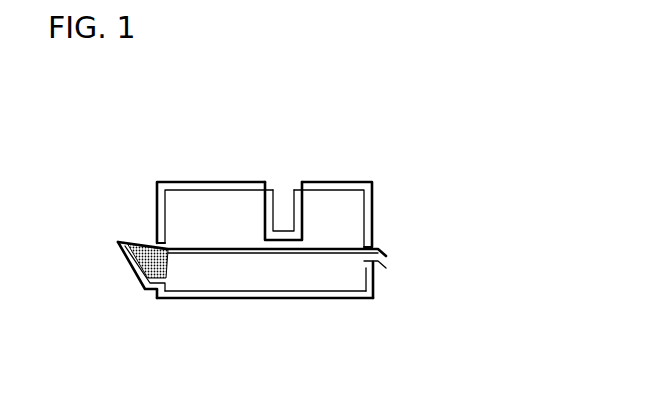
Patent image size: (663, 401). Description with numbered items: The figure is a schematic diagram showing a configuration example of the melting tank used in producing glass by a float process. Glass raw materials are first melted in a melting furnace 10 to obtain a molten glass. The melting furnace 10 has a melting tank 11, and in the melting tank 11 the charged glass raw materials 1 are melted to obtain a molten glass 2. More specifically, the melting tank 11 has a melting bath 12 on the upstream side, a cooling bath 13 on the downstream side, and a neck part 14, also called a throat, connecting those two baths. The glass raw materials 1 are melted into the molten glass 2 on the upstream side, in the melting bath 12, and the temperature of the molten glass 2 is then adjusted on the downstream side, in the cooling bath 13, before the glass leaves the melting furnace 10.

The glass raw materials 1 is at (152, 249).
The molten glass 2 is at (252, 305).
The melting furnace 10 is at (264, 233).
The melting tank 11 is at (247, 298).
The melting bath 12 is at (196, 244).
The cooling bath 13 is at (323, 244).
The neck part 14 is at (283, 240).